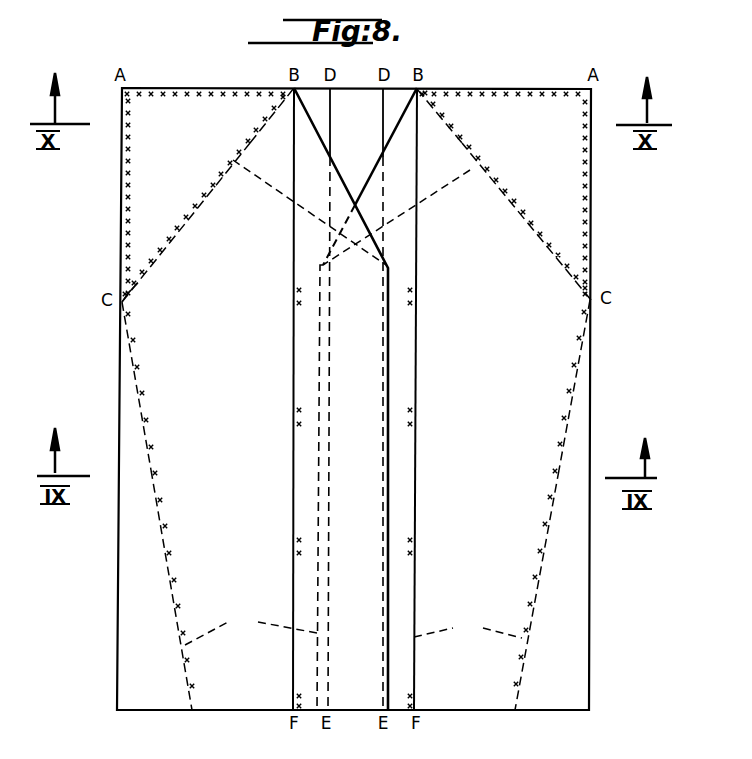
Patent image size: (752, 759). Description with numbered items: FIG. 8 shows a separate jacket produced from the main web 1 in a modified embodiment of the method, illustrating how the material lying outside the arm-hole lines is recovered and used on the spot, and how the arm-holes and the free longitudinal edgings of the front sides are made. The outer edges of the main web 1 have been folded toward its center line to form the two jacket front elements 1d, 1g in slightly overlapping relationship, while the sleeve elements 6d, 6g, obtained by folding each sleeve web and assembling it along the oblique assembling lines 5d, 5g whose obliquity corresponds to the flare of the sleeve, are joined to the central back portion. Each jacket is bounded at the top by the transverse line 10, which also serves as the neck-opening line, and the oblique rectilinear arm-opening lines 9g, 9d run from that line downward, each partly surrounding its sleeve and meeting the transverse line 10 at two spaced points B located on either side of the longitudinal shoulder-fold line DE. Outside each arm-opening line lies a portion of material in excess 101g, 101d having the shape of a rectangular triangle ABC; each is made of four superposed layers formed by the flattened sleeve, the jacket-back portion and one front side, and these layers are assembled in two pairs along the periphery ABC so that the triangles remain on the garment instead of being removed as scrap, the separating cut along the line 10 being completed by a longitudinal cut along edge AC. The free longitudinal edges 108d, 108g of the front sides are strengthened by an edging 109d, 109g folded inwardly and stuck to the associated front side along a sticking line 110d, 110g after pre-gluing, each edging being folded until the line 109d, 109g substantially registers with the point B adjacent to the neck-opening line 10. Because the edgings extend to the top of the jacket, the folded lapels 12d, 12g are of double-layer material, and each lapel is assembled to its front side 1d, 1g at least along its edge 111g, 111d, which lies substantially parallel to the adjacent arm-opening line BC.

The main web 1 is at (346, 100).
The transverse line 10 is at (362, 88).
The portion of material in excess 101g is at (140, 184).
The portion of material in excess 101d is at (572, 187).
The oblique rectilinear arm-opening line 9g is at (170, 250).
The oblique rectilinear arm-opening line 9d is at (535, 243).
The lapel edge 111g is at (250, 143).
The lapel edge 111d is at (450, 142).
The jacket front element 1g is at (158, 348).
The jacket front element 1d is at (542, 358).
The oblique assembling line 5g is at (170, 568).
The oblique assembling line 5d is at (540, 545).
The sleeve element 6g is at (251, 629).
The sleeve element 6d is at (468, 626).
The folded lapel 12g is at (268, 188).
The folded lapel 12d is at (432, 188).
The free longitudinal edge 108g is at (387, 467).
The free longitudinal edge 108d is at (317, 488).
The edging 109g is at (293, 522).
The edging 109d is at (417, 505).
The sticking line 110g is at (294, 412).
The sticking line 110d is at (412, 408).